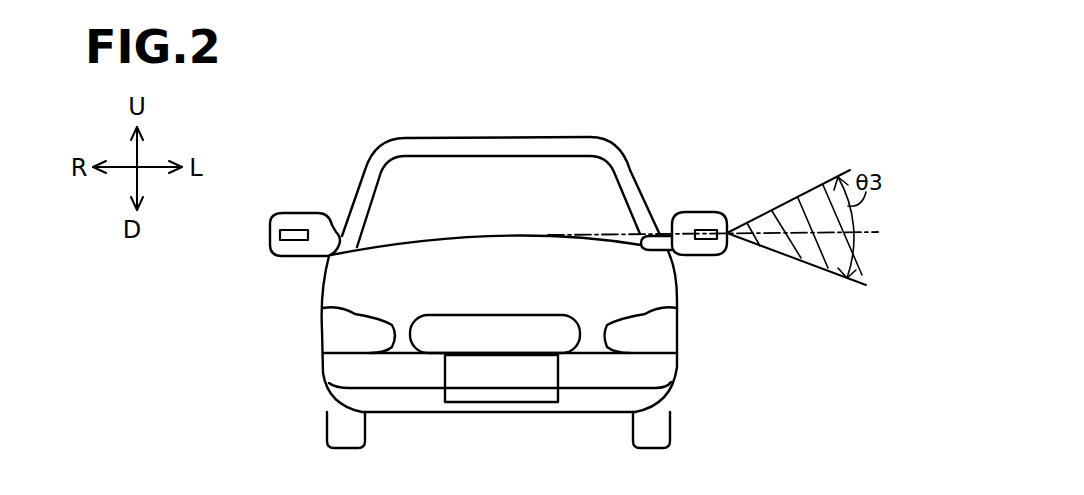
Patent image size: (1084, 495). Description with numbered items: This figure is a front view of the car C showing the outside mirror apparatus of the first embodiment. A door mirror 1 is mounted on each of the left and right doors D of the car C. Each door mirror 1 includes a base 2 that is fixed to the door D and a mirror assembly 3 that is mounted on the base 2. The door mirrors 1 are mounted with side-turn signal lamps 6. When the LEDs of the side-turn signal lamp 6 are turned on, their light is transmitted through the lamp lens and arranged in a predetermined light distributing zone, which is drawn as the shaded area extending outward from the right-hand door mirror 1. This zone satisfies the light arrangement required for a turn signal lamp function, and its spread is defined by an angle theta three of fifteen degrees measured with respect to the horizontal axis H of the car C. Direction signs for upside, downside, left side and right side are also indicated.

The door mirror 1 is at (292, 207).
The base 2 is at (340, 233).
The mirror assembly 3 is at (310, 222).
The side-turn signal lamp 6 is at (284, 233).
The car C is at (498, 138).
The door D is at (328, 255).
The horizontal axis H is at (710, 242).